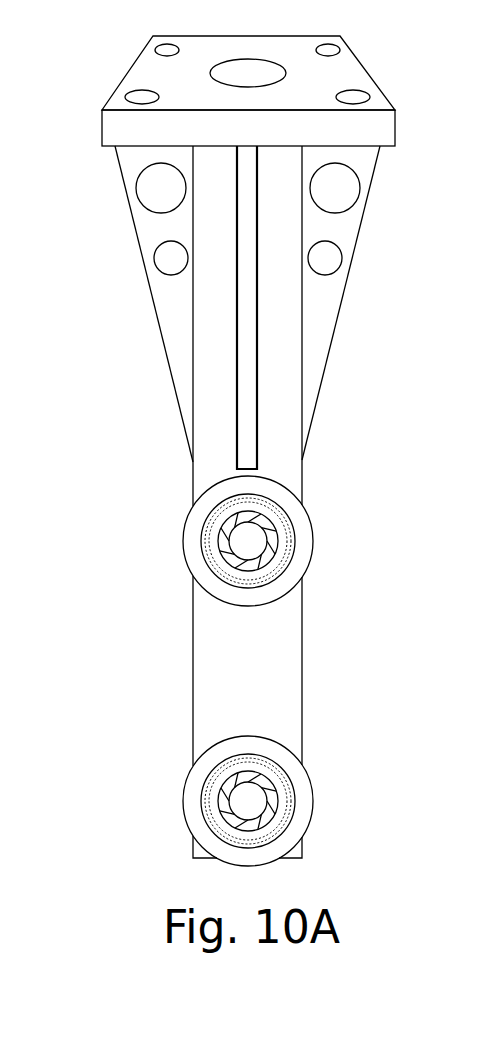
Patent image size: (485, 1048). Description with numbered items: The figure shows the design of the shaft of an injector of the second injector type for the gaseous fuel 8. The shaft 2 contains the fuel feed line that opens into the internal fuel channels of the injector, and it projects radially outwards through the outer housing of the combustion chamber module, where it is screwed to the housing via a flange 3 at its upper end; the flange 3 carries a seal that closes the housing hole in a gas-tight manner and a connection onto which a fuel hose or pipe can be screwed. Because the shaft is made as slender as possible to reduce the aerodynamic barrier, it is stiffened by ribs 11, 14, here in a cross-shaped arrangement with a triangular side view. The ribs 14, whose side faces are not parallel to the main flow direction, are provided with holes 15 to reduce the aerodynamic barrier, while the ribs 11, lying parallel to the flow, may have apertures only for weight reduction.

The shaft 2 is at (213, 435).
The flange 3 is at (163, 78).
The gaseous fuel 8 is at (248, 545).
The ribs 11 is at (247, 357).
The ribs 14 is at (180, 293).
The holes 15 is at (155, 192).